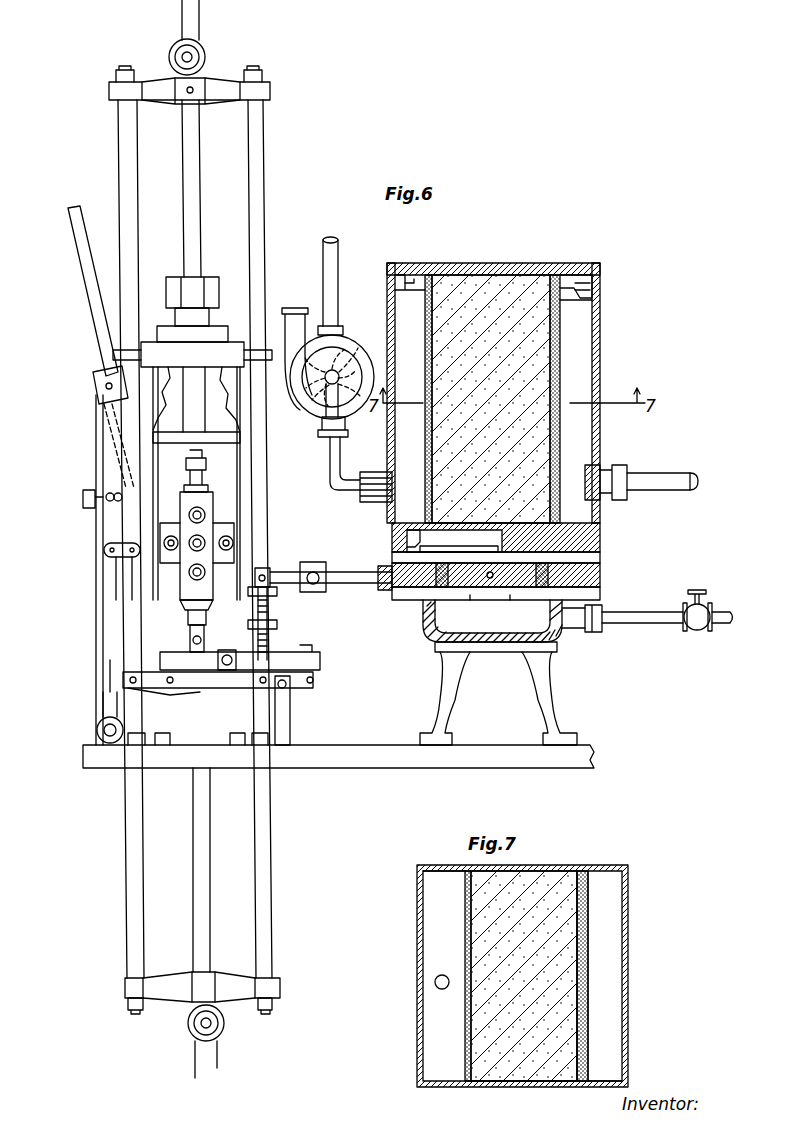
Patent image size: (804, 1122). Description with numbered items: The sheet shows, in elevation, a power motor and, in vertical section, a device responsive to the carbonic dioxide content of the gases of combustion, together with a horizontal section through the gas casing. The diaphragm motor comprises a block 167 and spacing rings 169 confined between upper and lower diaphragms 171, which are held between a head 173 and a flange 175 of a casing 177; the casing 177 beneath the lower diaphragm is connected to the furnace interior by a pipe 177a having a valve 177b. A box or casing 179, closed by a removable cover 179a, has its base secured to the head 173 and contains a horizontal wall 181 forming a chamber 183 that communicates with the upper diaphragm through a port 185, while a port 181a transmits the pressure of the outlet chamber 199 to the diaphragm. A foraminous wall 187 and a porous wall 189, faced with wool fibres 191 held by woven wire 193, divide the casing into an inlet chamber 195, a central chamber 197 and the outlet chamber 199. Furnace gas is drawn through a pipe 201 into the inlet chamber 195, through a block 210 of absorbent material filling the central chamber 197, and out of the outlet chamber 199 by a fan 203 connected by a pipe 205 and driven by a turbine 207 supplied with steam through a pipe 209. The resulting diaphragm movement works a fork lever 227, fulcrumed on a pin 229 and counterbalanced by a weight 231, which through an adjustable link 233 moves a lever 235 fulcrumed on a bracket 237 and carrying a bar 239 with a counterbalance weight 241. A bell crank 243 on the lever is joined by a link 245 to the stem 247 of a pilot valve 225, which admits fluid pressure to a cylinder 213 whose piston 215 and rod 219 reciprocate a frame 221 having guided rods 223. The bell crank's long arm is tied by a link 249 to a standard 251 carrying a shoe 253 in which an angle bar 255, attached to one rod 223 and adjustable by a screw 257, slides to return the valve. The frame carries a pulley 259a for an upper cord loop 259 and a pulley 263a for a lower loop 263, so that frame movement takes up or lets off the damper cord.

In FIG. 6, the block 167 is at (484, 600).
In FIG. 6, the spacing rings 169 is at (448, 600).
In FIG. 6, the diaphragms 171 is at (426, 604).
In FIG. 6, the head 173 is at (600, 563).
In FIG. 6, the flange 175 is at (601, 596).
In FIG. 6, the casing 177 is at (562, 632).
In FIG. 6, the pipe 177a is at (640, 612).
In FIG. 6, the valve 177b is at (702, 600).
In FIG. 6, the box or casing 179 is at (601, 325).
In FIG. 7, the box or casing 179 is at (626, 930).
In FIG. 6, the cover 179a is at (543, 274).
In FIG. 6, the horizontal wall 181 is at (600, 508).
In FIG. 6, the port 181a is at (410, 536).
In FIG. 7, the port 181a is at (435, 982).
In FIG. 6, the chamber 183 is at (410, 560).
In FIG. 6, the port 185 is at (522, 590).
In FIG. 6, the foraminous wall 187 is at (428, 290).
In FIG. 7, the foraminous wall 187 is at (464, 893).
In FIG. 6, the porous wall 189 is at (588, 276).
In FIG. 7, the porous wall 189 is at (582, 874).
In FIG. 6, the facing wall 191 is at (560, 300).
In FIG. 7, the facing wall 191 is at (585, 898).
In FIG. 6, the wall of woven wire 193 is at (560, 322).
In FIG. 7, the wall of woven wire 193 is at (582, 890).
In FIG. 6, the inlet chamber 195 is at (578, 345).
In FIG. 7, the inlet chamber 195 is at (600, 983).
In FIG. 6, the central chamber 197 is at (495, 290).
In FIG. 7, the central chamber 197 is at (540, 1078).
In FIG. 6, the outlet chamber 199 is at (395, 295).
In FIG. 7, the outlet chamber 199 is at (435, 938).
In FIG. 6, the pipe 201 is at (650, 480).
In FIG. 6, the fan 203 is at (341, 362).
In FIG. 6, the pipe 205 is at (338, 476).
In FIG. 6, the turbine 207 is at (346, 421).
In FIG. 6, the pipe 209 is at (331, 306).
In FIG. 6, the block of absorbent material 210 is at (475, 276).
In FIG. 7, the block of absorbent material 210 is at (502, 1082).
In FIG. 6, the cylinder 213 is at (225, 476).
In FIG. 6, the piston 215 is at (238, 440).
In FIG. 6, the rod 219 is at (200, 225).
In FIG. 6, the frame 221 is at (268, 162).
In FIG. 6, the rods 223 is at (117, 162).
In FIG. 6, the pilot valve 225 is at (213, 505).
In FIG. 6, the fork lever 227 is at (325, 575).
In FIG. 6, the pin 229 is at (378, 590).
In FIG. 6, the weight 231 is at (315, 593).
In FIG. 6, the adjustable link 233 is at (270, 634).
In FIG. 6, the lever 235 is at (220, 686).
In FIG. 6, the bracket 237 is at (280, 718).
In FIG. 6, the bar 239 is at (296, 666).
In FIG. 6, the counterbalance weight 241 is at (228, 650).
In FIG. 6, the bell crank 243 is at (128, 657).
In FIG. 6, the link 245 is at (195, 648).
In FIG. 6, the stem 247 is at (190, 622).
In FIG. 6, the link 249 is at (118, 553).
In FIG. 6, the standard 251 is at (98, 497).
In FIG. 6, the shoe 253 is at (96, 379).
In FIG. 6, the angle bar 255 is at (96, 324).
In FIG. 6, the adjusting screw 257 is at (84, 493).
In FIG. 6, the upper loop 259 is at (184, 10).
In FIG. 6, the pulley 259a is at (193, 57).
In FIG. 6, the loop 263 is at (196, 1063).
In FIG. 6, the pulley 263a is at (212, 1023).